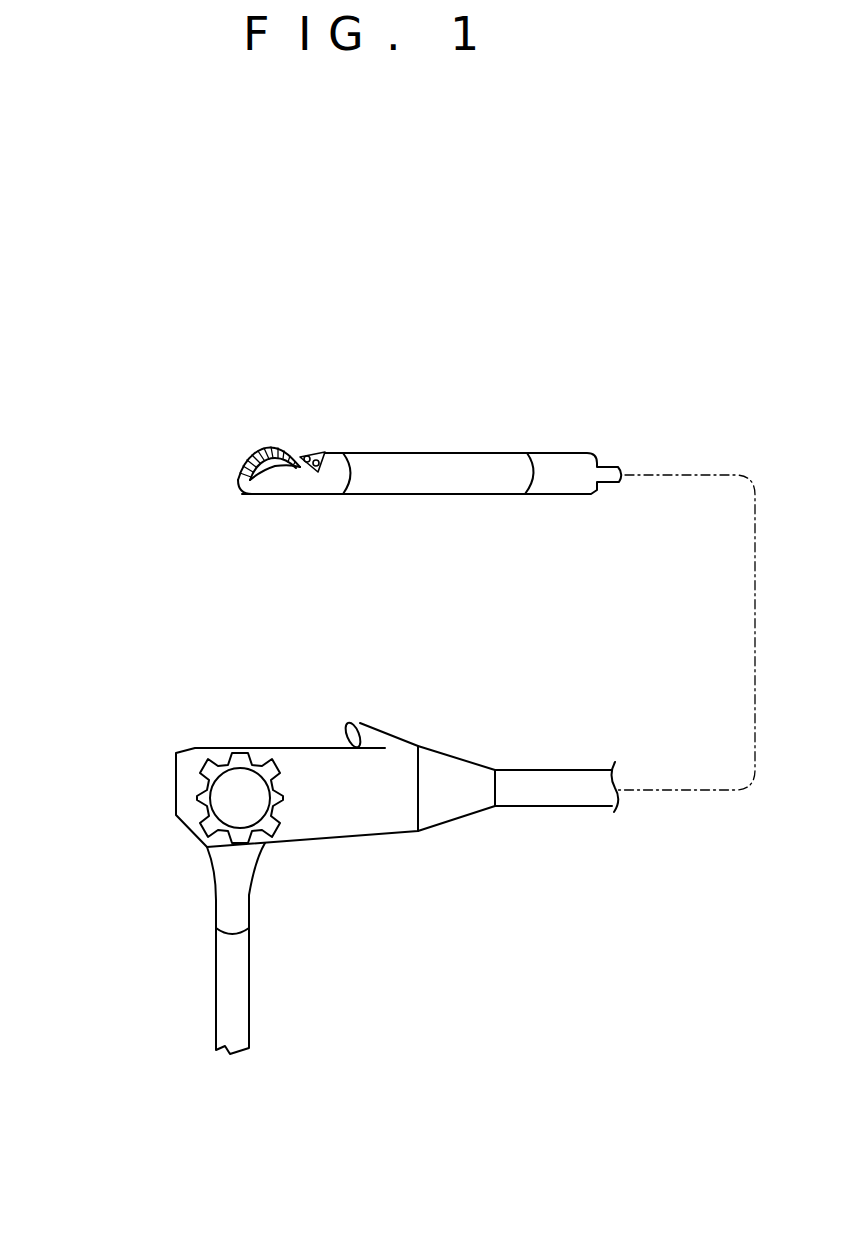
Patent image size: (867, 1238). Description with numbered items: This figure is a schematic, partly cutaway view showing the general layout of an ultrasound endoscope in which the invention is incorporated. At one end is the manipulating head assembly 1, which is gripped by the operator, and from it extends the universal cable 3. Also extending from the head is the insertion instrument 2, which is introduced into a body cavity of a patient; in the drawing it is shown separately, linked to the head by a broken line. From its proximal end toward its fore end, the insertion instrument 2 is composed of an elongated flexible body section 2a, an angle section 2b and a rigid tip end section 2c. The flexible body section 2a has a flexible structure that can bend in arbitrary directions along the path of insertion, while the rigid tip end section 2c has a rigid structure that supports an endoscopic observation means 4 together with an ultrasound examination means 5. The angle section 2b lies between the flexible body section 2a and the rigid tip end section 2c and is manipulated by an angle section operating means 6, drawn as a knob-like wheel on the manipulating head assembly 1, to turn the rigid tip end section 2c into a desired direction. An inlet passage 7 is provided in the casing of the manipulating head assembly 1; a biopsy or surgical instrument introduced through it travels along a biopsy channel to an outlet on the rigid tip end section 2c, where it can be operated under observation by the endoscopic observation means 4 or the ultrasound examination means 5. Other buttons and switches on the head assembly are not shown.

The manipulating head assembly 1 is at (345, 825).
The insertion instrument 2 is at (452, 615).
The flexible body section 2a is at (592, 800).
The angle section 2b is at (440, 452).
The rigid tip end section 2c is at (302, 493).
The universal cable 3 is at (225, 1010).
The endoscopic observation means 4 is at (306, 450).
The ultrasound examination means 5 is at (237, 450).
The angle section operating means 6 is at (222, 795).
The inlet passage 7 is at (372, 737).